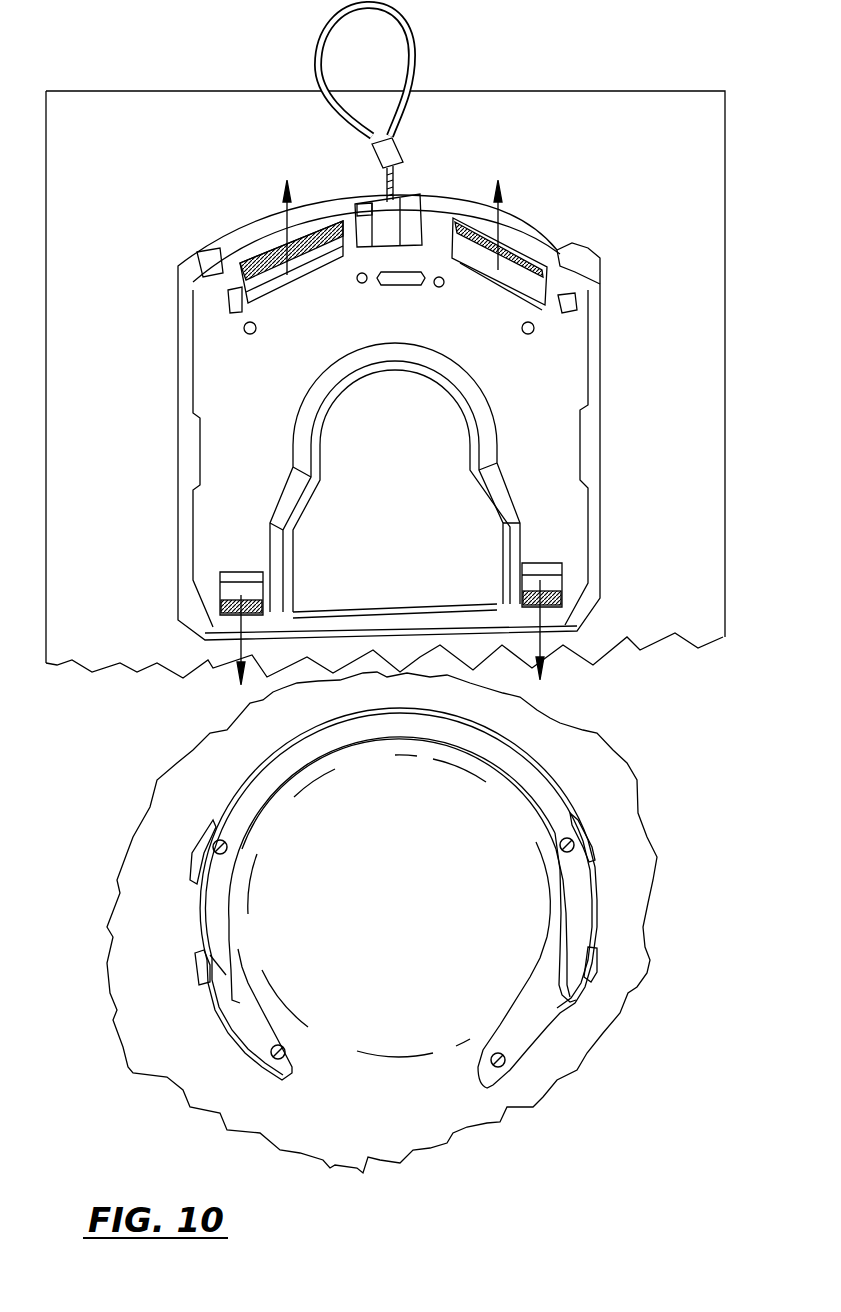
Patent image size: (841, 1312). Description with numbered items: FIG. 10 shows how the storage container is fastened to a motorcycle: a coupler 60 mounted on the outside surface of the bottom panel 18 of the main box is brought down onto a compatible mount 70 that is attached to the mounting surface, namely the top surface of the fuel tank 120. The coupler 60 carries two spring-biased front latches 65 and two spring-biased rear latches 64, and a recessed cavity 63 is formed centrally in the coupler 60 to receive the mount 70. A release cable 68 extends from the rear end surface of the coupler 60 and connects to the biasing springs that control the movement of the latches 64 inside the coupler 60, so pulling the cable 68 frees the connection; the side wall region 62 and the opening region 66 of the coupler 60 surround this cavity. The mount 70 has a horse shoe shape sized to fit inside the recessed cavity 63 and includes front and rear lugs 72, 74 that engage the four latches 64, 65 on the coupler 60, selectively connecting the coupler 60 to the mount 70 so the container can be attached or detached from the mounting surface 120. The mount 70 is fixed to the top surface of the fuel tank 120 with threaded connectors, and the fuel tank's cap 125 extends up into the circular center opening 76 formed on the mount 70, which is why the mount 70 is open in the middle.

The bottom panel 18 is at (675, 257).
The coupler 60 is at (183, 265).
The side rim 62 is at (178, 333).
The recessed cavity 63 is at (258, 385).
The rear latches 64 is at (255, 256).
The front latches 65 is at (240, 607).
The arch opening 66 is at (382, 348).
The release cable 68 is at (325, 37).
The mount 70 is at (205, 797).
The front lugs 72 is at (187, 847).
The rear lugs 74 is at (197, 960).
The circular center opening 76 is at (517, 1010).
The fuel tank 120 is at (650, 900).
The fuel tank's cap 125 is at (273, 952).